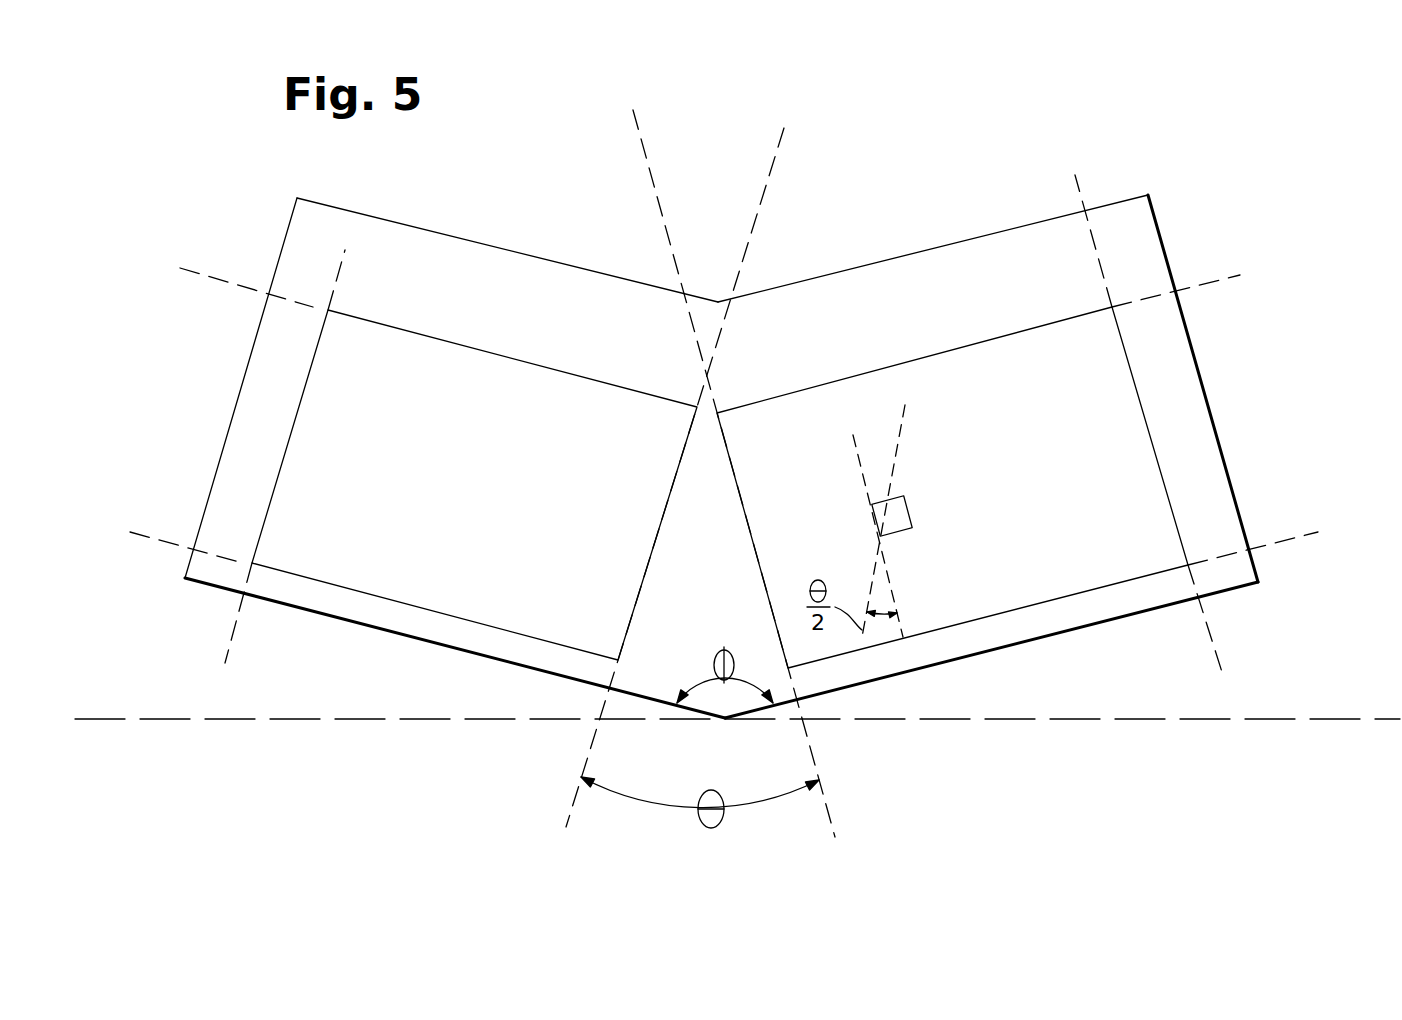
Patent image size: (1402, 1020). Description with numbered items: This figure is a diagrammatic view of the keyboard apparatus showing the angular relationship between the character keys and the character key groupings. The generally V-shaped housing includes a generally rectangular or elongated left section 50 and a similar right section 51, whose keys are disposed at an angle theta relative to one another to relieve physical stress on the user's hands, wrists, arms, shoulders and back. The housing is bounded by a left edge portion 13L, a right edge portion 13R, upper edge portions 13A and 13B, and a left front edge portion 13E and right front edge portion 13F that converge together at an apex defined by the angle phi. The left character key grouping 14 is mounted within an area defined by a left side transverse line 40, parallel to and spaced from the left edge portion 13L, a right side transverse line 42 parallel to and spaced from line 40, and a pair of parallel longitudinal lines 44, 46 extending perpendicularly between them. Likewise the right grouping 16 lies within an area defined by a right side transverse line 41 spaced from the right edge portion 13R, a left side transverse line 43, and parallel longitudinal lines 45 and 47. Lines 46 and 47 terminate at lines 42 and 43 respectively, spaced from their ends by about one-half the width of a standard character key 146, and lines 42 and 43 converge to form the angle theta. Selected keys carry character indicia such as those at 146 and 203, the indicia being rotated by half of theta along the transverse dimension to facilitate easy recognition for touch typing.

The left edge portion 13L is at (278, 245).
The top edge left portion 13A is at (572, 263).
The top edge right portion 13B is at (1118, 195).
The right edge portion 13R is at (1242, 508).
The left front edge portion 13E is at (375, 628).
The right front edge portion 13F is at (1105, 622).
The left character key grouping 14 is at (305, 547).
The right character key grouping 16 is at (1137, 492).
The left side transverse line 40 is at (237, 615).
The right side transverse line 41 is at (1217, 647).
The right side transverse line 42 is at (782, 140).
The left side transverse line 43 is at (828, 818).
The longitudinal line 44 is at (143, 538).
The longitudinal line 45 is at (1302, 537).
The longitudinal line 46 is at (196, 266).
The longitudinal line 47 is at (1225, 275).
The left section 50 is at (532, 278).
The right section 51 is at (892, 272).
The character key 146 is at (912, 508).
The character indicia 203 is at (895, 528).